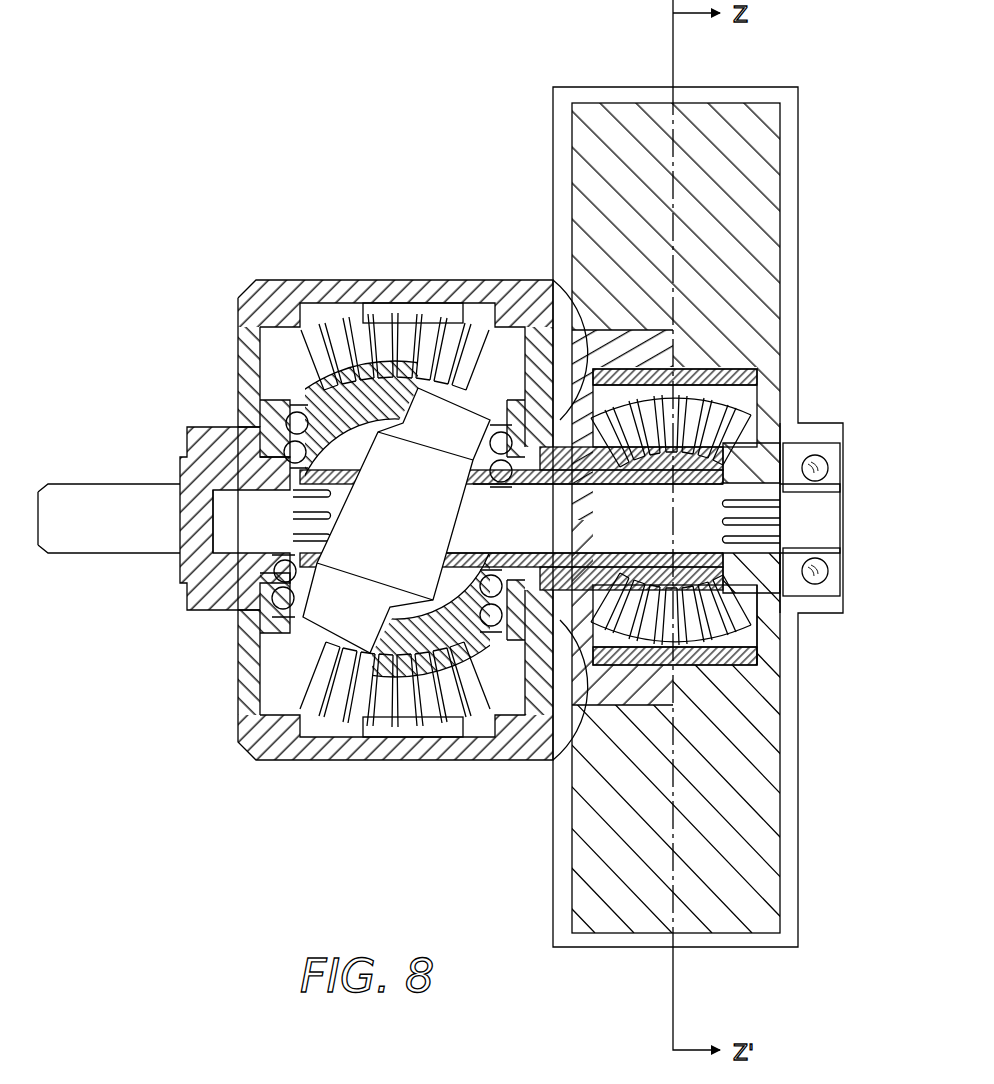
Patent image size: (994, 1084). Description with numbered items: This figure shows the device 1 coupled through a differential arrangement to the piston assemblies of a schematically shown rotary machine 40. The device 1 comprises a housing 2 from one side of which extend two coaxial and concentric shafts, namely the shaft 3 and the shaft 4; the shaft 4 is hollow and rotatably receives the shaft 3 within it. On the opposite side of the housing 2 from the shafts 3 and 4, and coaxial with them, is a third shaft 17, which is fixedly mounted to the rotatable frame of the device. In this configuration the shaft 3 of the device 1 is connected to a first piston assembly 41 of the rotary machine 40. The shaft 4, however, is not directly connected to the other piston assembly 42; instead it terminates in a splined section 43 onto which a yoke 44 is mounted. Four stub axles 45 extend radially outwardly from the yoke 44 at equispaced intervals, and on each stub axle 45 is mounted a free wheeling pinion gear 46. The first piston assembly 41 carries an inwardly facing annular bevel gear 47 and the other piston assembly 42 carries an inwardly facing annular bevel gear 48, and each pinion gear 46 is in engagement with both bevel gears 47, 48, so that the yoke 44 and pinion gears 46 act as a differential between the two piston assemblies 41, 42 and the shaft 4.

The device 1 is at (380, 530).
The housing 2 is at (242, 768).
The shaft 3 is at (820, 522).
The shaft 4 is at (583, 345).
The third shaft 17 is at (123, 497).
The rotary machine 40 is at (612, 482).
The first piston assembly 41 is at (765, 333).
The piston assembly 42 is at (633, 692).
The splined section 43 is at (730, 665).
The yoke 44 is at (705, 450).
The stub axles 45 is at (735, 677).
The pinion gear 46 is at (745, 380).
The annular bevel gear 47 is at (765, 612).
The annular bevel gear 48 is at (577, 640).